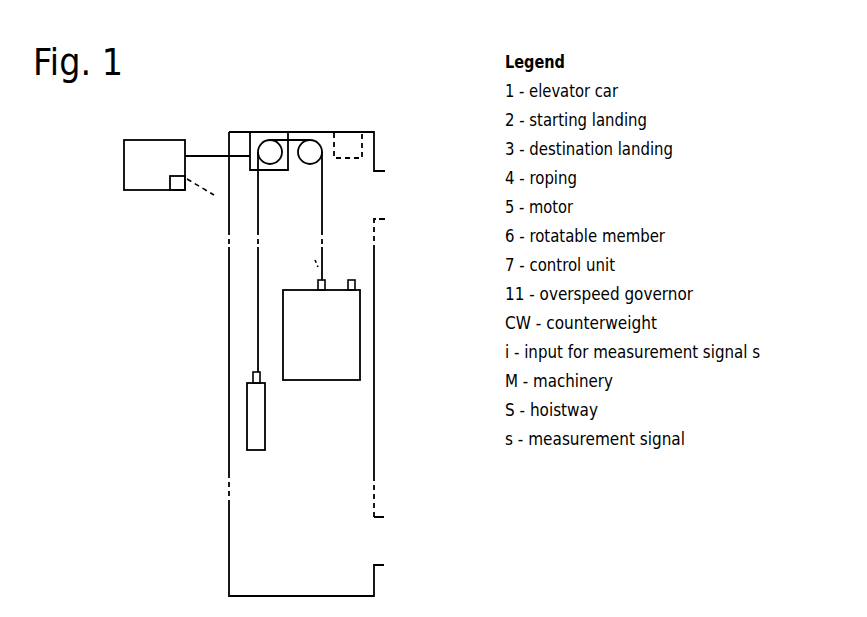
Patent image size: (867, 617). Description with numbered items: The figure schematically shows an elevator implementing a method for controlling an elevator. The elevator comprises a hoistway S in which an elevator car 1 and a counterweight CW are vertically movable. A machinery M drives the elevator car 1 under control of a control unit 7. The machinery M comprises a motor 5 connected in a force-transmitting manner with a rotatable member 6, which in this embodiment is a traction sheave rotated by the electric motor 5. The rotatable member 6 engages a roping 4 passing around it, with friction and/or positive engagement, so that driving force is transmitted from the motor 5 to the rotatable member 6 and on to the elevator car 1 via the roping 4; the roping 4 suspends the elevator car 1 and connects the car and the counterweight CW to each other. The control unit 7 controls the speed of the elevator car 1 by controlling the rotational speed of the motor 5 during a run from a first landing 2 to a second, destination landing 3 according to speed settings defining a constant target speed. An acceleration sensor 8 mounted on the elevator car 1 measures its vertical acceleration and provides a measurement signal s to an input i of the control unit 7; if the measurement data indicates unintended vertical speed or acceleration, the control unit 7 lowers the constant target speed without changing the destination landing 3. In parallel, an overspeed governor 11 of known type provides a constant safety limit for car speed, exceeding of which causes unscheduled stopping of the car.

The elevator car 1 is at (321, 330).
The first landing 2 is at (377, 565).
The destination landing 3 is at (386, 218).
The roping 4 is at (257, 345).
The motor 5 is at (289, 171).
The rotatable member 6 is at (274, 165).
The control unit 7 is at (160, 140).
The acceleration sensor 8 is at (357, 285).
The overspeed governor 11 is at (351, 133).
The counterweight CW is at (247, 411).
The input i is at (177, 192).
The machinery M is at (288, 144).
The hoistway S is at (307, 364).
The measurement signal s is at (208, 197).